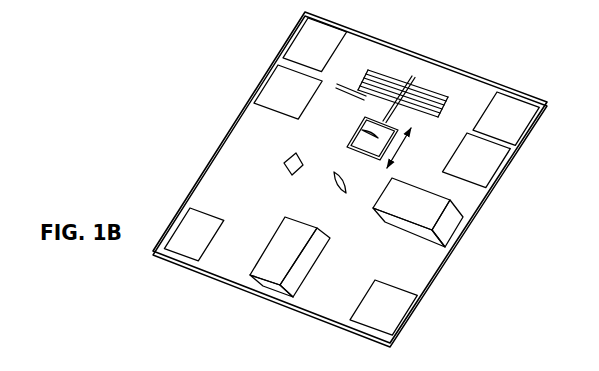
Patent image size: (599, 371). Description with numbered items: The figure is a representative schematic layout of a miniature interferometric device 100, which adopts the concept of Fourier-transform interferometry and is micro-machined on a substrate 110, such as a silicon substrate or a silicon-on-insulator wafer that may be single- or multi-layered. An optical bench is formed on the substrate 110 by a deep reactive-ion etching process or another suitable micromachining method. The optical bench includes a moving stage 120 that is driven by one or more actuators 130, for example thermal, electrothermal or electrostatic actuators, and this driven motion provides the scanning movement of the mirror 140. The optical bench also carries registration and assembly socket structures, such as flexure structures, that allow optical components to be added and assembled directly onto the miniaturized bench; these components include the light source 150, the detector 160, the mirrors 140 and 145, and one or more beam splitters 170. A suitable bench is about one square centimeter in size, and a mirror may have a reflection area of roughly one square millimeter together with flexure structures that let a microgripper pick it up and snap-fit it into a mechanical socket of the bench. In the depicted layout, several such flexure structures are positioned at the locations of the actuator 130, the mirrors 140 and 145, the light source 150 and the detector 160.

The device 100 is at (160, 167).
The substrate 110 is at (428, 296).
The moving stage 120 is at (412, 150).
The actuator 130 is at (430, 92).
The mirror 140 is at (360, 118).
The mirror 145 is at (281, 152).
The light source 150 is at (277, 230).
The detector 160 is at (462, 246).
The beam splitter 170 is at (346, 204).